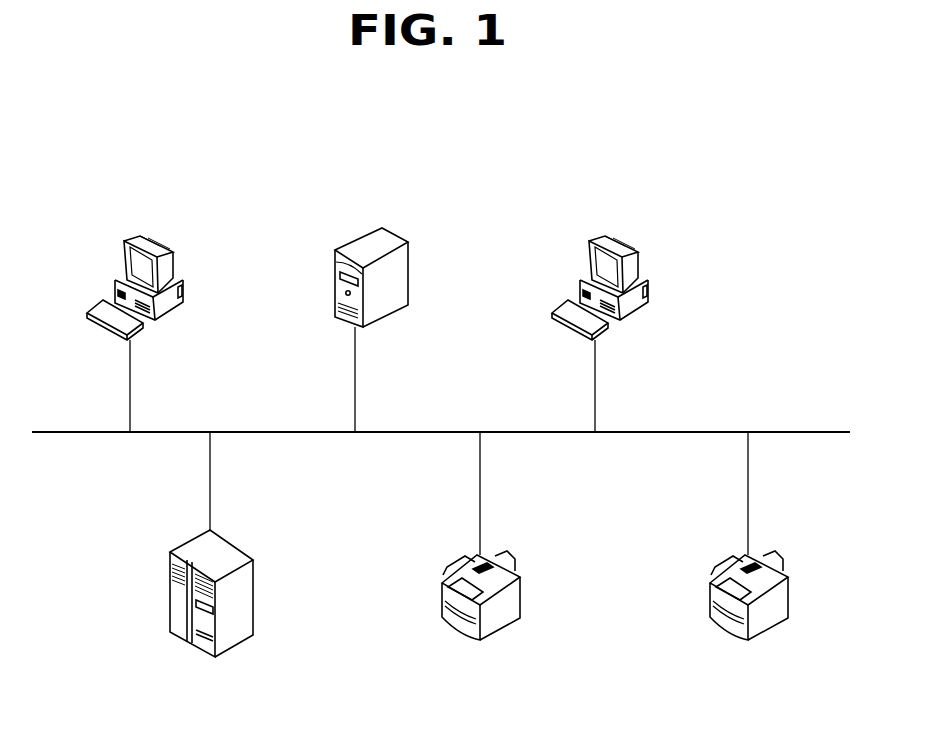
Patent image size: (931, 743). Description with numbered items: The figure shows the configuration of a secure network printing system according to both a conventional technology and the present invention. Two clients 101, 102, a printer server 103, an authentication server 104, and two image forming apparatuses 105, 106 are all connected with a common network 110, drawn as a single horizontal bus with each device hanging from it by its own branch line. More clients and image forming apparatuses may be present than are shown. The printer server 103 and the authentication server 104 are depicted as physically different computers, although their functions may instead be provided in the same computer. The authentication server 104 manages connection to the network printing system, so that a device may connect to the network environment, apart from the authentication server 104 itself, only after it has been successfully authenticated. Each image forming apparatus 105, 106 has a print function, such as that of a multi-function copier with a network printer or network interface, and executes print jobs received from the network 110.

The client 101 is at (162, 240).
The client 102 is at (627, 240).
The printer server 103 is at (390, 230).
The authentication server 104 is at (185, 638).
The image forming apparatus 105 is at (467, 640).
The image forming apparatus 106 is at (735, 640).
The network 110 is at (778, 432).